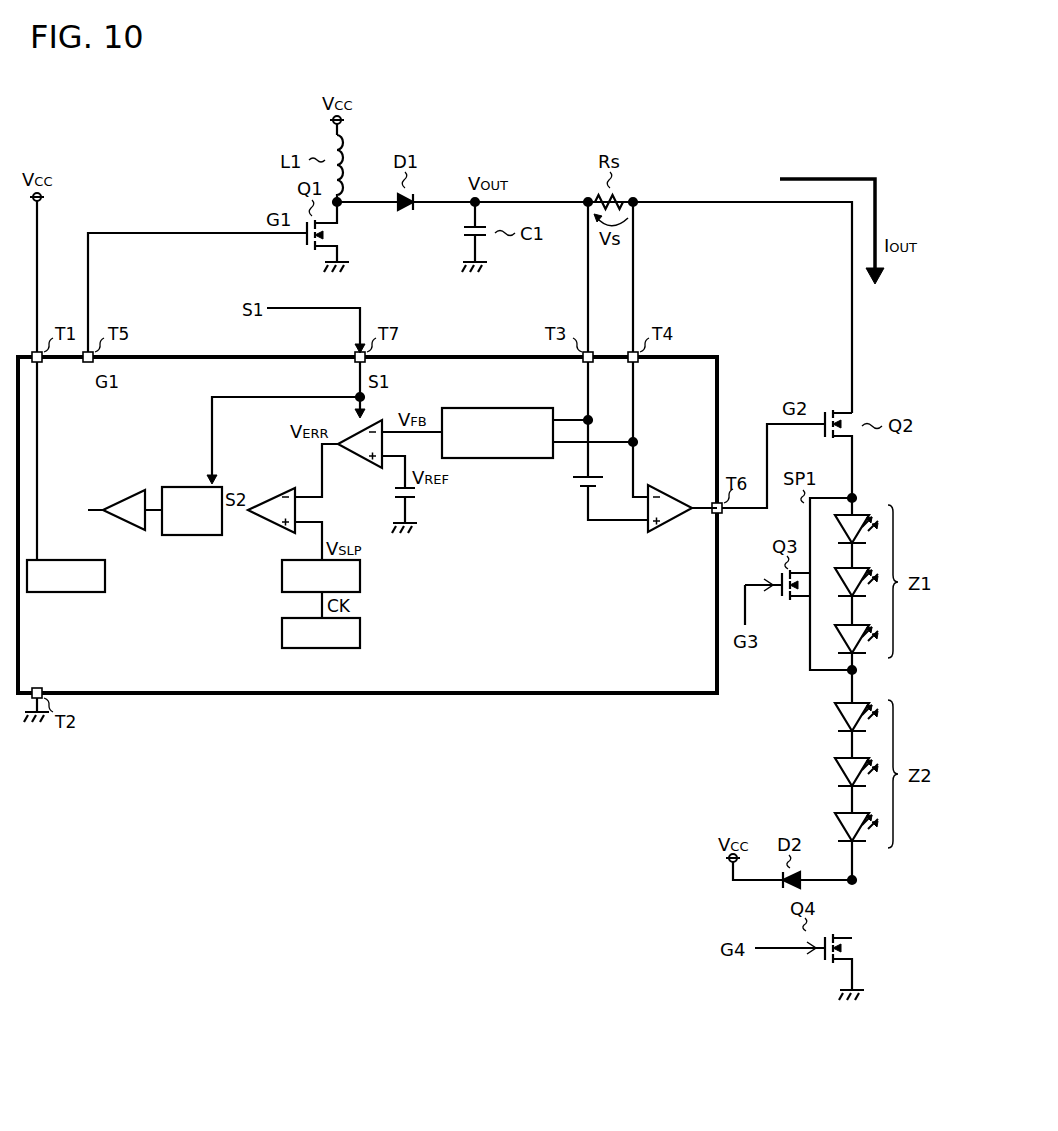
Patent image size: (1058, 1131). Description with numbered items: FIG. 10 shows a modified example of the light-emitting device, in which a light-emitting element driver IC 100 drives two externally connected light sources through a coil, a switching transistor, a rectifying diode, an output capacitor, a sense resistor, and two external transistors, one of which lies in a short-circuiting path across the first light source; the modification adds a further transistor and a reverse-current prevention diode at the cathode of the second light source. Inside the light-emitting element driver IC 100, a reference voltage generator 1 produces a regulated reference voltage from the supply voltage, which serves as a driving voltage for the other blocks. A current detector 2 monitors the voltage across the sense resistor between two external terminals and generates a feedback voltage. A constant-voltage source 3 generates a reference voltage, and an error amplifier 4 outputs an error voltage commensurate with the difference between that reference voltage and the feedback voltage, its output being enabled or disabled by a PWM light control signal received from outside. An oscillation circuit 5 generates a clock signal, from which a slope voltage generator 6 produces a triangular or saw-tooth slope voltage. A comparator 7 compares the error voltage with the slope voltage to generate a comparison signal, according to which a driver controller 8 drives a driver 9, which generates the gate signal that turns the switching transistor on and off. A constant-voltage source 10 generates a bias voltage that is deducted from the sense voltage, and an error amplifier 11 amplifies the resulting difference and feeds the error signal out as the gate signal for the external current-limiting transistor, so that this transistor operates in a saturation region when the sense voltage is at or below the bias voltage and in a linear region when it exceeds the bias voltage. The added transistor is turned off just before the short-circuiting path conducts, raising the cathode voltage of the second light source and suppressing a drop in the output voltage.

The reference voltage generator 1 is at (66, 560).
The current detector 2 is at (497, 408).
The constant-voltage source 3 is at (418, 493).
The error amplifier 4 is at (362, 468).
The oscillation circuit 5 is at (362, 633).
The slope voltage generator 6 is at (362, 578).
The comparator 7 is at (272, 488).
The driver controller 8 is at (194, 487).
The driver 9 is at (125, 490).
The constant-voltage source 10 is at (572, 482).
The error amplifier 11 is at (668, 485).
The light-emitting element driver IC 100 is at (368, 693).